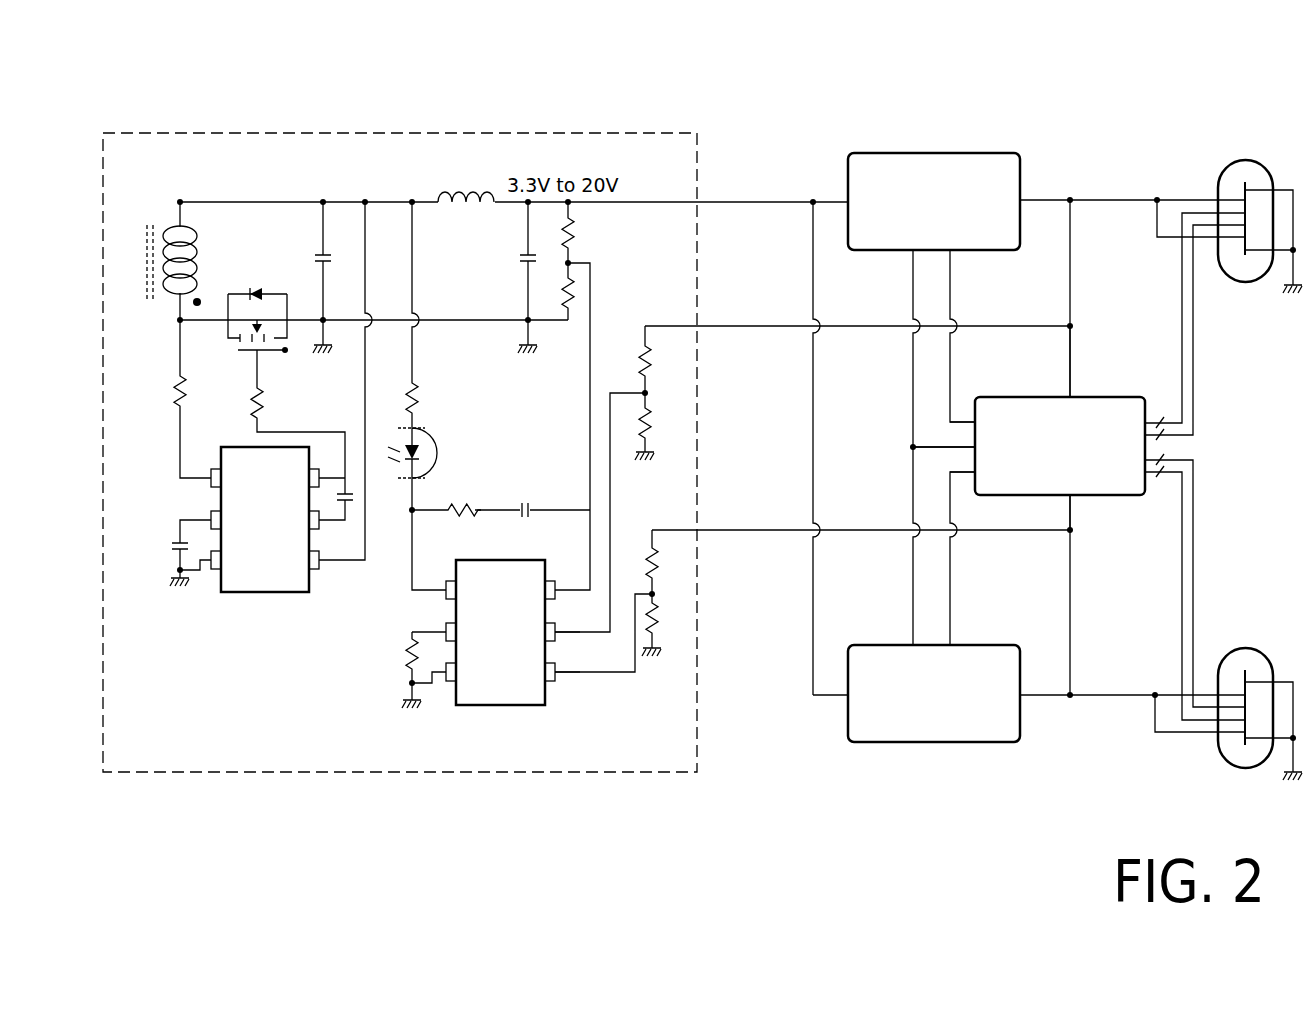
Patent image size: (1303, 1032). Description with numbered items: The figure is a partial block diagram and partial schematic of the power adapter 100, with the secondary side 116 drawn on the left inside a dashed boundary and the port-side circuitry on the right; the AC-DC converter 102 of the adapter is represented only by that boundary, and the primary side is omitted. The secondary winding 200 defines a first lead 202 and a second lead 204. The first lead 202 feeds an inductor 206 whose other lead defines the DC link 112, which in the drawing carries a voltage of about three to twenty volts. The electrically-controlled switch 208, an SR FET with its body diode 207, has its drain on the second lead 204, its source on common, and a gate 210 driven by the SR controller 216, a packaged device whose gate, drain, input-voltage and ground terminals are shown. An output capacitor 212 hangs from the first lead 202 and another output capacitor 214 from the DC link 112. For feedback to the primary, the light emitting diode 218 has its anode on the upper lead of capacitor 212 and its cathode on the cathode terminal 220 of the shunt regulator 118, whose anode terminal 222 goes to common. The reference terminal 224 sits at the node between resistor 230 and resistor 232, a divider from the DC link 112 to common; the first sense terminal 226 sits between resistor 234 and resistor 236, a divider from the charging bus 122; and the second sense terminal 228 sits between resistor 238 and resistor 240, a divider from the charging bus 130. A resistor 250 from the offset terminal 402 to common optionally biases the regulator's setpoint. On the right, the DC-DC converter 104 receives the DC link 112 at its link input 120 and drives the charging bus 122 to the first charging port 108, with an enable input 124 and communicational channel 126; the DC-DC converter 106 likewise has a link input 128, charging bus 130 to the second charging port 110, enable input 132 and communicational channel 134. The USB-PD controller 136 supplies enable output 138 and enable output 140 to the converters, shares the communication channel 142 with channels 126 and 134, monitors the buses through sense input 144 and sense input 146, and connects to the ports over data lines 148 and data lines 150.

The power adapter 100 is at (87, 93).
The AC-DC converter 102 is at (175, 120).
The DC-DC converter 104 is at (937, 153).
The DC-DC converter 106 is at (950, 742).
The first charging port 108 is at (1238, 160).
The second charging port 110 is at (1240, 768).
The DC link 112 is at (703, 195).
The secondary side 116 is at (400, 130).
The shunt regulator 118 is at (523, 710).
The link input 120 is at (846, 201).
The charging bus 122 is at (1105, 200).
The enable input 124 is at (950, 250).
The communicational channel 126 is at (913, 250).
The link input 128 is at (846, 696).
The charging bus 130 is at (1115, 695).
The enable input 132 is at (950, 645).
The communicational channel 134 is at (913, 645).
The USB-PD controller 136 is at (1100, 397).
The enable output 138 is at (951, 421).
The enable output 140 is at (953, 474).
The communication channel 142 is at (974, 446).
The sense input 144 is at (1075, 397).
The sense input 146 is at (1071, 496).
The data lines 148 is at (1207, 408).
The data lines 150 is at (1207, 487).
The secondary winding 200 is at (170, 225).
The first lead 202 is at (195, 205).
The second lead 204 is at (193, 325).
The inductor 206 is at (452, 190).
The body diode 207 is at (274, 294).
The electrically-controlled switch 208 is at (288, 353).
The gate 210 is at (256, 355).
The output capacitor 212 is at (317, 254).
The output capacitor 214 is at (520, 266).
The SR controller 216 is at (285, 605).
The light emitting diode 218 is at (432, 433).
The cathode terminal 220 is at (446, 588).
The anode terminal 222 is at (444, 685).
The reference terminal 224 is at (559, 588).
The first sense terminal 226 is at (560, 631).
The second sense terminal 228 is at (558, 673).
The resistor 230 is at (583, 237).
The resistor 232 is at (583, 298).
The resistor 234 is at (649, 374).
The resistor 236 is at (656, 432).
The resistor 238 is at (658, 583).
The resistor 240 is at (661, 640).
The resistor 250 is at (398, 652).
The offset terminal 402 is at (444, 630).